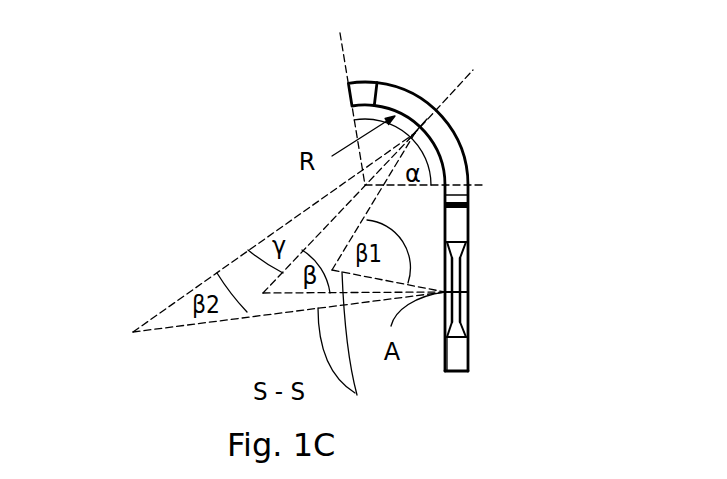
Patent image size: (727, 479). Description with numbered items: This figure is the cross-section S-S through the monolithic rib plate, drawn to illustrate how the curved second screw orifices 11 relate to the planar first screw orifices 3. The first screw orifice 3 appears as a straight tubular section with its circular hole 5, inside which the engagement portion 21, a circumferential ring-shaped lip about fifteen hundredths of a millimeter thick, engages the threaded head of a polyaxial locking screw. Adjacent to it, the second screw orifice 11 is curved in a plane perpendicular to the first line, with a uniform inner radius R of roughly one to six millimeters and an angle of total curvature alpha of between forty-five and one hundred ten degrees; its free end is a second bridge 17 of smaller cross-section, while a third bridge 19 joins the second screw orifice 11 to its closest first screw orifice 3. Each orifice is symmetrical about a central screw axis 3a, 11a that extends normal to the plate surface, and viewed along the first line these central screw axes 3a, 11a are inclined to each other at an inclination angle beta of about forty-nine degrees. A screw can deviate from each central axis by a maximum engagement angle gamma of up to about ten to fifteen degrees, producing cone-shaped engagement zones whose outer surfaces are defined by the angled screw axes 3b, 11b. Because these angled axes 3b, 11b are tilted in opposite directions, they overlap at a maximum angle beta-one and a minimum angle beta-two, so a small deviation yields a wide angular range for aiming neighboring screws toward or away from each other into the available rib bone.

The first screw orifice 3 is at (470, 218).
The central screw axis 3a is at (488, 292).
The angled screw axis 3b is at (420, 365).
The circular hole 5 is at (467, 298).
The second screw orifice 11 is at (370, 124).
The central screw axis 11a is at (463, 83).
The angled screw axis 11b is at (370, 203).
The second bridge 17 is at (364, 80).
The third bridge 19 is at (473, 193).
The engagement portion 21 is at (470, 335).